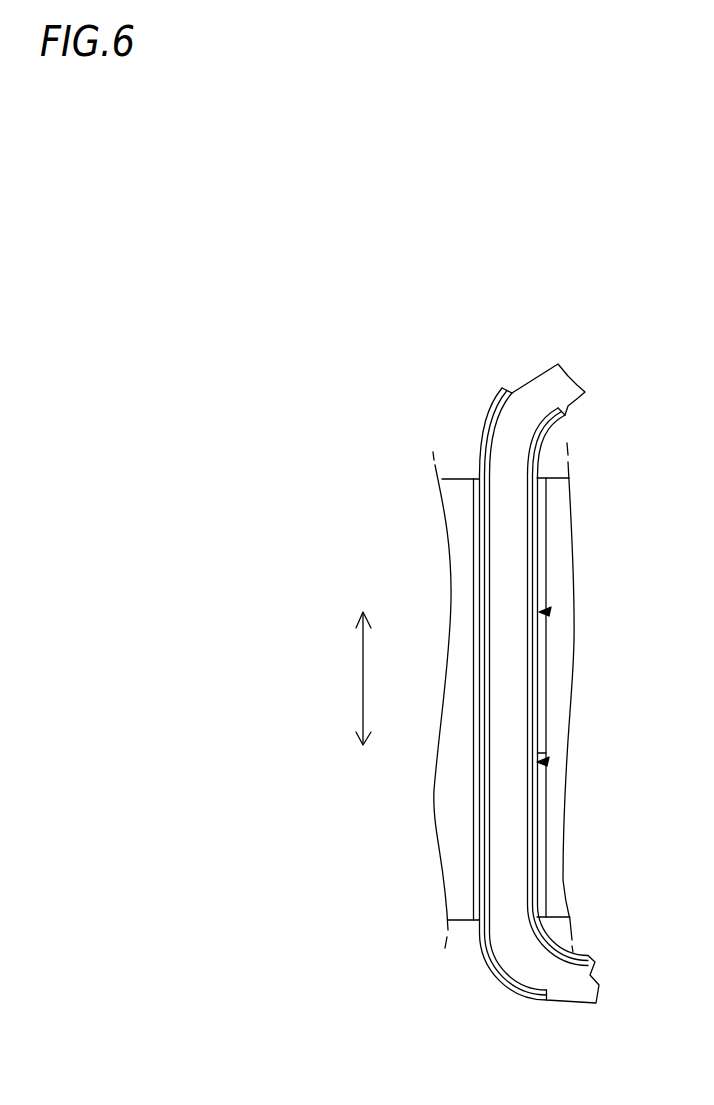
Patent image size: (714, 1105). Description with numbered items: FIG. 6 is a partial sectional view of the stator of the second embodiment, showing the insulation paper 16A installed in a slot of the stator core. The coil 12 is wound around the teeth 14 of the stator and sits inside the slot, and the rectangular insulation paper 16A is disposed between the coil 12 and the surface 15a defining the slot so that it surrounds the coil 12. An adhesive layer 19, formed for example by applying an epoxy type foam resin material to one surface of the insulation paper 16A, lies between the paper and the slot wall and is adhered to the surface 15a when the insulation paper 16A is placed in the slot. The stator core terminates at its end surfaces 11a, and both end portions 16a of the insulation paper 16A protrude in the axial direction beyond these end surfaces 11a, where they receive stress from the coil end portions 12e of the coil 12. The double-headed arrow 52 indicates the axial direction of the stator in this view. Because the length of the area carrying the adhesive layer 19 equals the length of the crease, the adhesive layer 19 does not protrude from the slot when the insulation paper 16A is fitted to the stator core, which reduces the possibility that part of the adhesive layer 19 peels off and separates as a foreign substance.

The coil 12 is at (492, 571).
The coil end portion 12e is at (540, 393).
The teeth 14 is at (565, 690).
The end surface of the stator core 11a is at (454, 478).
The adhesive layer 19 is at (546, 541).
The end portion of the insulation paper 16a is at (496, 411).
The insulation paper 16A is at (545, 612).
The surface defining the slot 15a is at (475, 830).
The direction arrow 52 is at (350, 678).